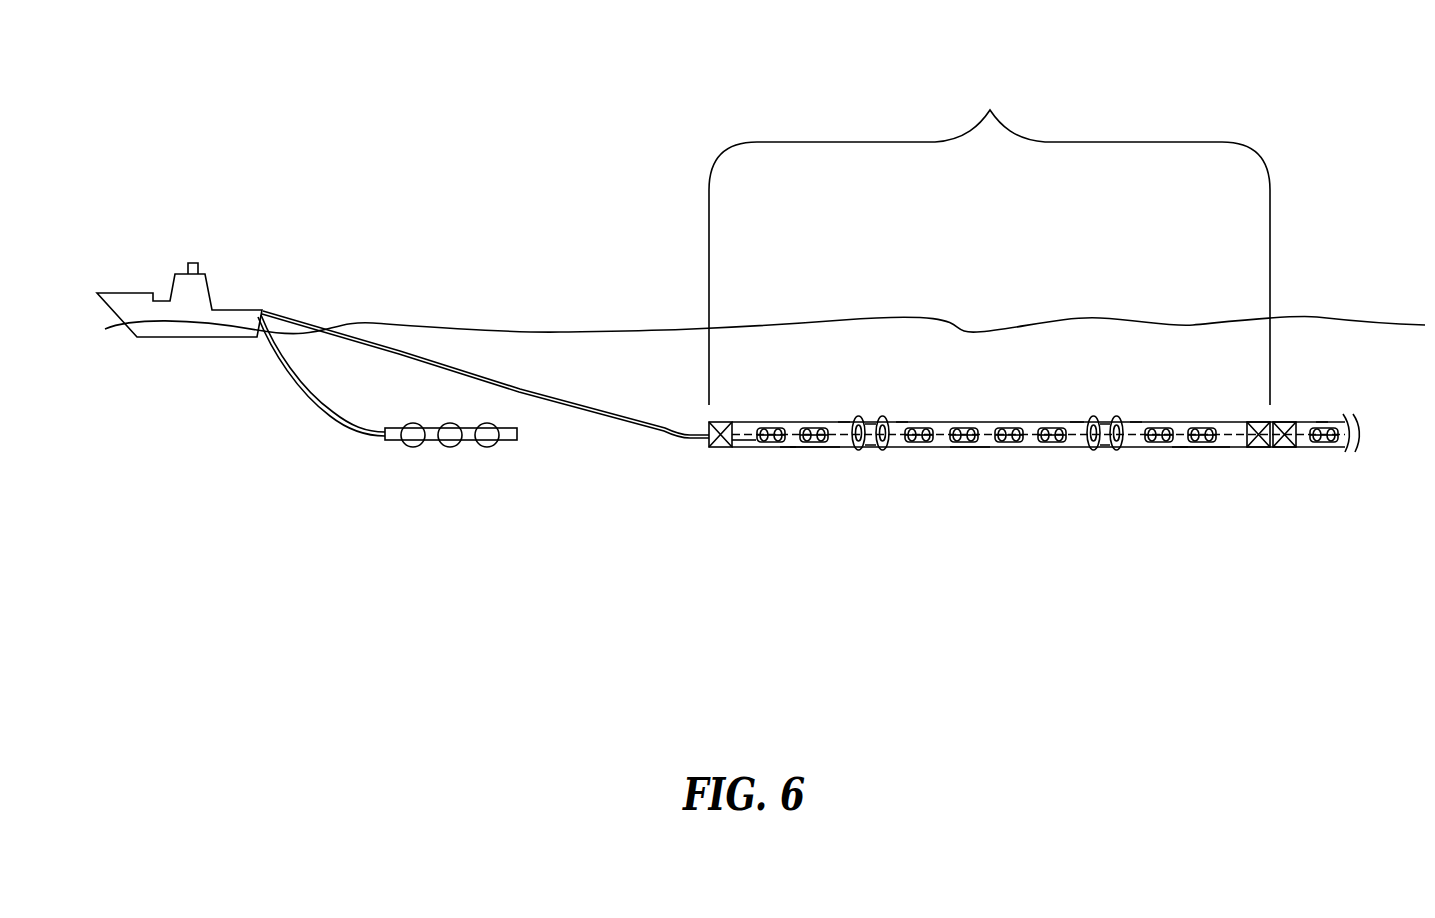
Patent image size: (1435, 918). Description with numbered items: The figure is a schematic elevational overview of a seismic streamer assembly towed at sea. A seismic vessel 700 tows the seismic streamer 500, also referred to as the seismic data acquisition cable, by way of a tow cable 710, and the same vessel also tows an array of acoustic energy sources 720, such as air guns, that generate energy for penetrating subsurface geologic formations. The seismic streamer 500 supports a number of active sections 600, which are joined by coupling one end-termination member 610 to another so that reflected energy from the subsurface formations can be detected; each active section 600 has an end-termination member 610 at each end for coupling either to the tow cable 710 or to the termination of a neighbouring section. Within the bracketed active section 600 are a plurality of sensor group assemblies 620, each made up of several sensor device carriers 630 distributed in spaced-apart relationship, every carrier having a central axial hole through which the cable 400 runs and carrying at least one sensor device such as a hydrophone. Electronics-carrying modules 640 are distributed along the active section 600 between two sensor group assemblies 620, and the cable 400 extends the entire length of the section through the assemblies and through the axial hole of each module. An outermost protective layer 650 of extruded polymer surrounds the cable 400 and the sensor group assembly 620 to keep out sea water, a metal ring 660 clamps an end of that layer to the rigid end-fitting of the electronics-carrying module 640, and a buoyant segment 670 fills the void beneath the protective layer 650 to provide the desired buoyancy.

The seismic data acquisition cable 400 is at (747, 450).
The seismic streamer 500 is at (1182, 557).
The active section 600 is at (989, 245).
The end-termination member 610 is at (720, 450).
The sensor group assembly 620 is at (812, 457).
The sensor device carrier 630 is at (773, 419).
The electronics-carrying module 640 is at (870, 452).
The outermost protective layer 650 is at (845, 410).
The metal ring 660 is at (860, 452).
The buoyant segment 670 is at (1077, 419).
The seismic vessel 700 is at (210, 271).
The tow cable 710 is at (513, 378).
The array of acoustic energy sources 720 is at (318, 407).